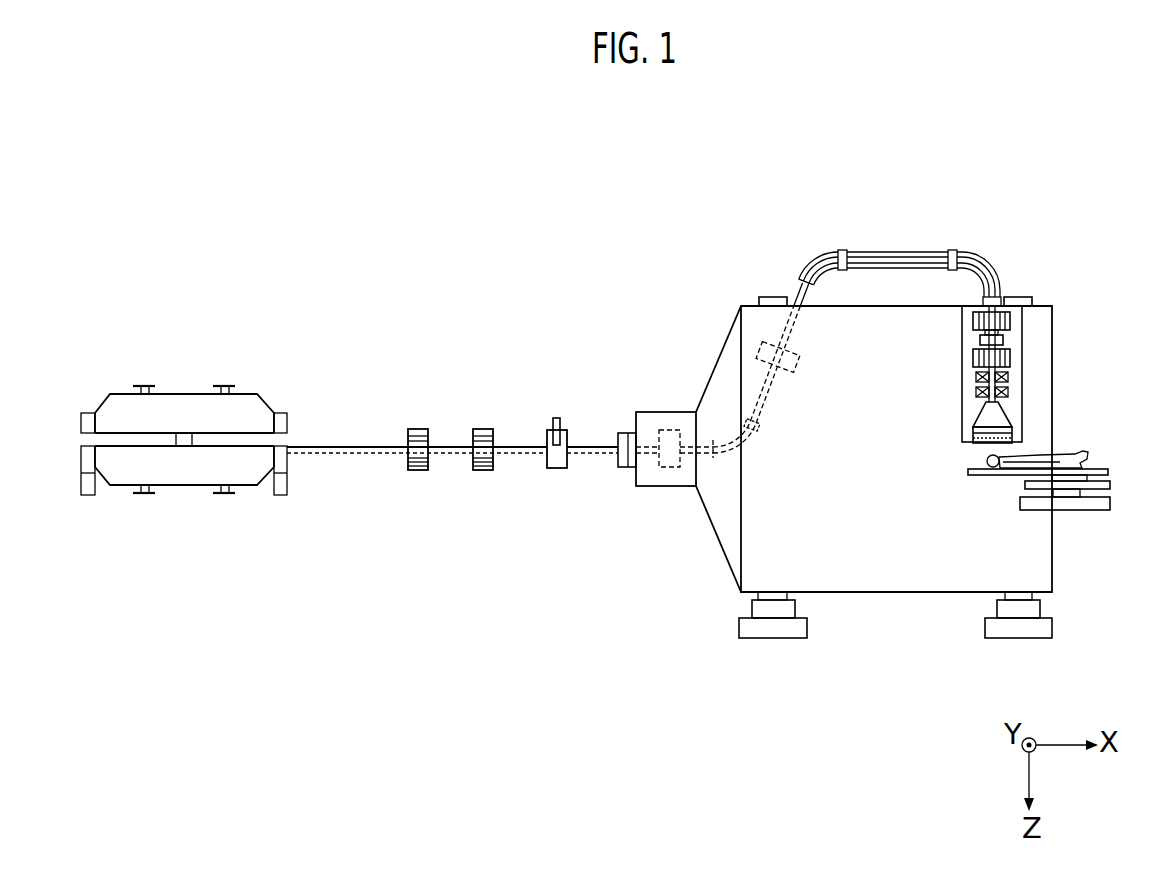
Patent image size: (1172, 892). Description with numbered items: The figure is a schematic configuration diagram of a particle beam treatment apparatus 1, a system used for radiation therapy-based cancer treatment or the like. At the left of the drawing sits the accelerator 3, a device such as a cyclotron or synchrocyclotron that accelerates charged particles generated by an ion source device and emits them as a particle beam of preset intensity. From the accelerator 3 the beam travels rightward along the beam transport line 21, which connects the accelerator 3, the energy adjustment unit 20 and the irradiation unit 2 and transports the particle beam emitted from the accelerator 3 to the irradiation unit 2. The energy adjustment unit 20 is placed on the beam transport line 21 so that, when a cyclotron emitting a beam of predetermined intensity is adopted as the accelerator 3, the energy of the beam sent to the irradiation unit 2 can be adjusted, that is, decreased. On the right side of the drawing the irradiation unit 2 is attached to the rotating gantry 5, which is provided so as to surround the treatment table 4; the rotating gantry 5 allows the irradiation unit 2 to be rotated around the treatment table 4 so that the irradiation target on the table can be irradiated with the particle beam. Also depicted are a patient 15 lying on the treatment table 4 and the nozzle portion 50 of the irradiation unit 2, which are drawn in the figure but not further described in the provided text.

The particle beam treatment apparatus 1 is at (150, 183).
The irradiation unit 2 is at (1037, 349).
The accelerator 3 is at (122, 393).
The treatment table 4 is at (1110, 473).
The rotating gantry 5 is at (1053, 556).
The patient 15 is at (1020, 452).
The energy adjustment unit 20 is at (550, 428).
The beam transport line 21 is at (1003, 194).
The irradiation nozzle 50 is at (955, 380).